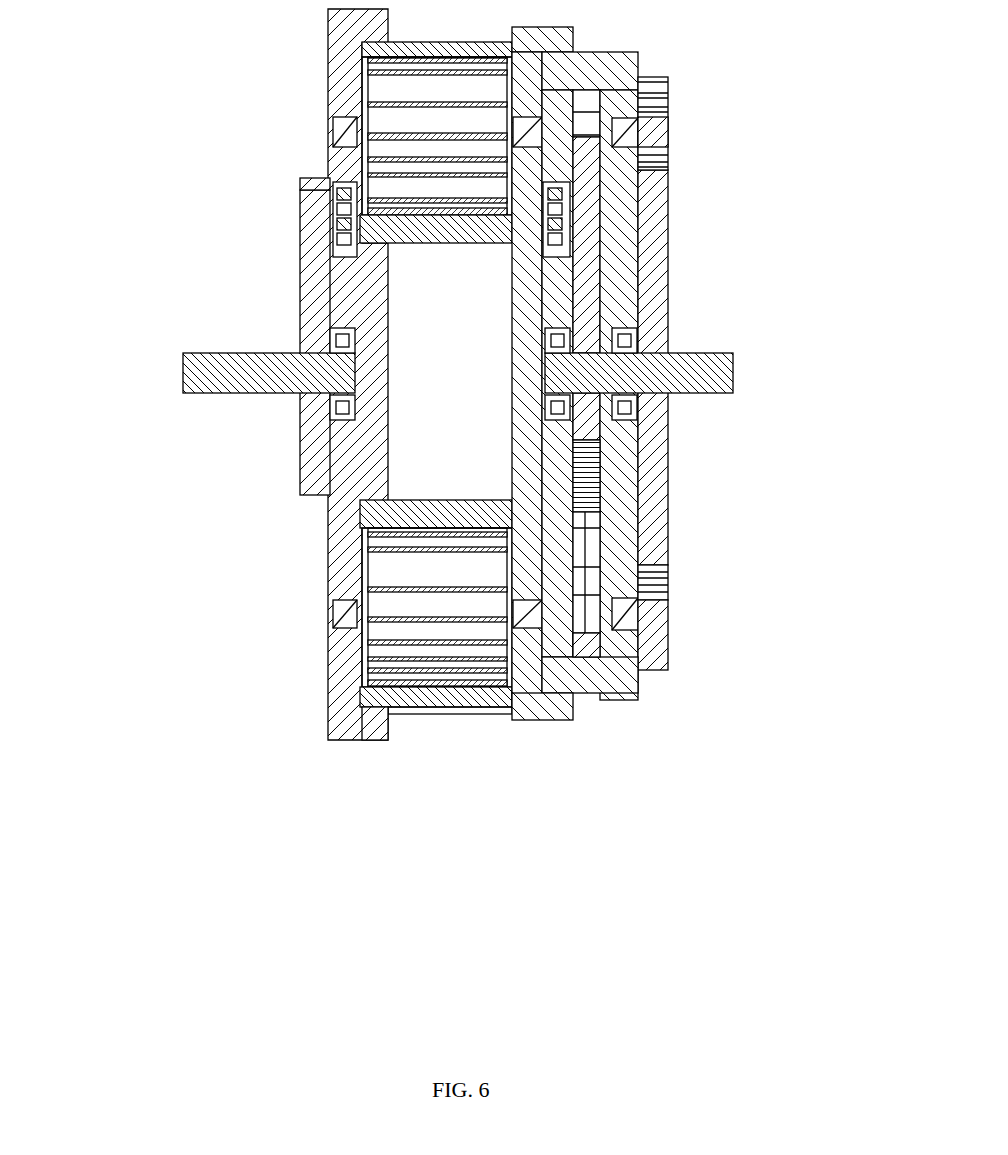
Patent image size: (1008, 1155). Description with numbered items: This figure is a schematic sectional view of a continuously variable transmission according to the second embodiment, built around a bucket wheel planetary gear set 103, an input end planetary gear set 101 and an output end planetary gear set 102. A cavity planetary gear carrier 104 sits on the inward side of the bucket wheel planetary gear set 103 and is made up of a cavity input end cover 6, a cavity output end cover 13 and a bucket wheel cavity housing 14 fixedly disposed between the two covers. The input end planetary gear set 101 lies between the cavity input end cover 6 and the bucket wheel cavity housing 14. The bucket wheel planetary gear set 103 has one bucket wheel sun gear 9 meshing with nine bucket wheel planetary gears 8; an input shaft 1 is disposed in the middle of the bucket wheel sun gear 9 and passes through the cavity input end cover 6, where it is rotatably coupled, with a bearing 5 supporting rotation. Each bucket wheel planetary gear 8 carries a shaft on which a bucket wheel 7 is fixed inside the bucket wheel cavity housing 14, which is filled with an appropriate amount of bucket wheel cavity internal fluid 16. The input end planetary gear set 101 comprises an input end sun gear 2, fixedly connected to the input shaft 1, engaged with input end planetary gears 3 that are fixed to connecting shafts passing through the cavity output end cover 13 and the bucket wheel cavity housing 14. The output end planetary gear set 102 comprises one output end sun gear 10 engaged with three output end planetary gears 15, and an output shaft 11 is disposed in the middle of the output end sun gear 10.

The input shaft 1 is at (695, 378).
The input end sun gear 2 is at (585, 422).
The input end planetary gear 3 is at (585, 490).
The bearing 5 is at (330, 195).
The cavity input end cover 6 is at (617, 284).
The bucket wheel 7 is at (437, 158).
The bucket wheel planetary gear 8 is at (650, 98).
The bucket wheel sun gear 9 is at (655, 218).
The output end sun gear 10 is at (328, 302).
The output shaft 11 is at (213, 370).
The cavity output end cover 13 is at (370, 464).
The bucket wheel cavity housing 14 is at (566, 30).
The output end planetary gear 15 is at (310, 217).
The bucket wheel cavity internal fluid 16 is at (428, 682).
The input end planetary gear set 101 is at (585, 660).
The output end planetary gear set 102 is at (357, 718).
The bucket wheel planetary gear set 103 is at (650, 640).
The cavity planetary gear carrier 104 is at (437, 707).